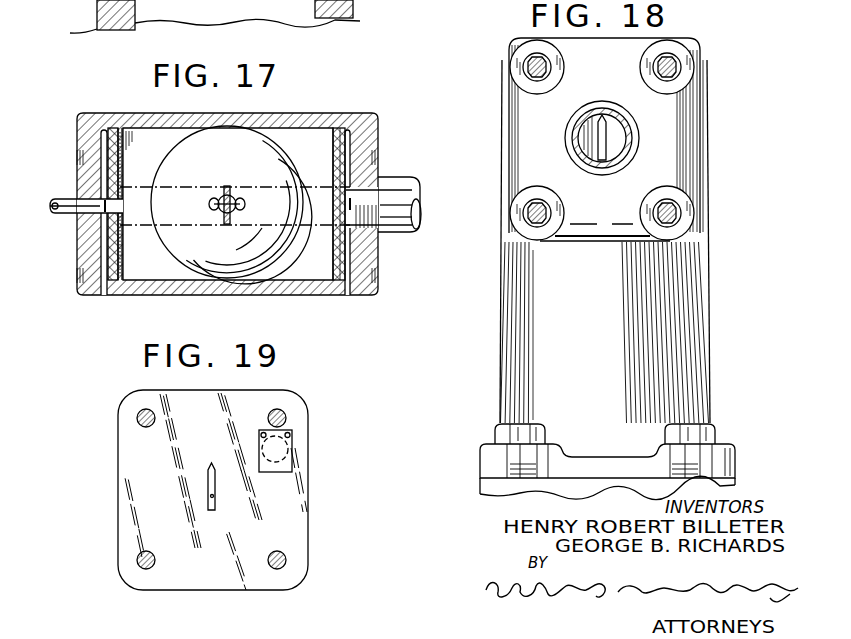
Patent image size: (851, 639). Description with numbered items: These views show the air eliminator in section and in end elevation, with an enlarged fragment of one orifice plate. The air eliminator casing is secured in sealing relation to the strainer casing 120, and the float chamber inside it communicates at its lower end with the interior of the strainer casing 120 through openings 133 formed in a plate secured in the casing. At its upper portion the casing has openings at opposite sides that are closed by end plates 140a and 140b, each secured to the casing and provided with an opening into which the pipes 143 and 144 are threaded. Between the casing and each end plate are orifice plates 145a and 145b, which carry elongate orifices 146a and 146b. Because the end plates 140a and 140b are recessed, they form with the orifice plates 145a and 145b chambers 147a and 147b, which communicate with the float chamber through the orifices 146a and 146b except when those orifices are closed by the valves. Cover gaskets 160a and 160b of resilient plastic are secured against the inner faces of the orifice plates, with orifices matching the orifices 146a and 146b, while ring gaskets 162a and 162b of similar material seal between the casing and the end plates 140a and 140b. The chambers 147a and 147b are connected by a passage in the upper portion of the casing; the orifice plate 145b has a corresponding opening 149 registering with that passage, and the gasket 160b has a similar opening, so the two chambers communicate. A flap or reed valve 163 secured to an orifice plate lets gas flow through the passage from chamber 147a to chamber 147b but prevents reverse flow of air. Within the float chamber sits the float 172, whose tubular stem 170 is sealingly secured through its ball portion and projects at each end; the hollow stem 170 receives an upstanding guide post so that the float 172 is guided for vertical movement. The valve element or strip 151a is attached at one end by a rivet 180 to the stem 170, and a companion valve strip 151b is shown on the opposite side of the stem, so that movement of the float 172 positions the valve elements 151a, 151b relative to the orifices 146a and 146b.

In FIG. 17, the strainer casing 120 is at (50, 45).
In FIG. 17, the openings 133 is at (285, 7).
In FIG. 17, the end plate 140a is at (90, 186).
In FIG. 17, the end plate 140b is at (363, 138).
In FIG. 17, the pipe 143 is at (55, 213).
In FIG. 17, the pipe 144 is at (424, 231).
In FIG. 18, the pipe 144 is at (580, 132).
In FIG. 17, the orifice plate 145a is at (112, 297).
In FIG. 17, the orifice plate 145b is at (342, 297).
In FIG. 19, the orifice plate 145b is at (295, 518).
In FIG. 17, the elongate orifice 146a is at (115, 198).
In FIG. 17, the elongate orifice 146b is at (285, 205).
In FIG. 18, the elongate orifice 146b is at (607, 145).
In FIG. 19, the elongate orifice 146b is at (213, 497).
In FIG. 17, the chamber 147a is at (106, 243).
In FIG. 17, the chamber 147b is at (353, 113).
In FIG. 19, the opening 149 is at (296, 448).
In FIG. 17, the valve element or strip 151a is at (211, 207).
In FIG. 17, the right hub lobe 151b is at (243, 205).
In FIG. 17, the cover gasket 160a is at (118, 256).
In FIG. 17, the cover gasket 160b is at (333, 255).
In FIG. 17, the ring gasket 162a is at (106, 127).
In FIG. 17, the ring gasket 162b is at (346, 293).
In FIG. 19, the flap or reed valve 163 is at (285, 462).
In FIG. 17, the tubular stem 170 is at (222, 200).
In FIG. 17, the float 172 is at (230, 160).
In FIG. 17, the rivet 180 is at (257, 186).